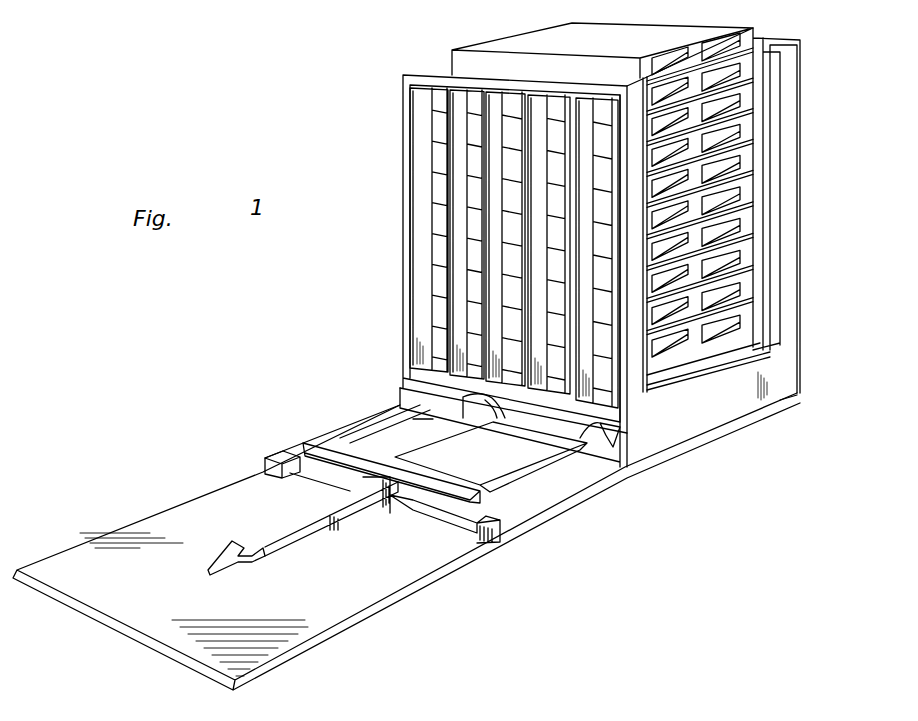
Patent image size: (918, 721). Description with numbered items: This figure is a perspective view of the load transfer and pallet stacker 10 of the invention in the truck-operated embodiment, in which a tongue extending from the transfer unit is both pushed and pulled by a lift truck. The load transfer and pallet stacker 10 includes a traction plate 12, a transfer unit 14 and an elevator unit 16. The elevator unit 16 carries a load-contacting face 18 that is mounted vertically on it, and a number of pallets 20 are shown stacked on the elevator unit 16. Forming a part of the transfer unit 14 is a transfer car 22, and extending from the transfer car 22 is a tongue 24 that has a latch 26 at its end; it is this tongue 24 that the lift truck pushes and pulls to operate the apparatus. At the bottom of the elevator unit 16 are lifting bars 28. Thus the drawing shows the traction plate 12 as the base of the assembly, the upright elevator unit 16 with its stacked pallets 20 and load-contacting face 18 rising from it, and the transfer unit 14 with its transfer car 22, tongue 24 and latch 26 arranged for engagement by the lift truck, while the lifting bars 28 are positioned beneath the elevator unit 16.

The load transfer and pallet stacker 10 is at (636, 480).
The traction plate 12 is at (377, 613).
The transfer unit 14 is at (527, 488).
The elevator unit 16 is at (683, 383).
The load-contacting face 18 is at (403, 215).
The pallets 20 is at (537, 44).
The transfer car 22 is at (360, 438).
The tongue 24 is at (340, 520).
The latch 26 is at (240, 545).
The lifting bars 28 is at (468, 402).